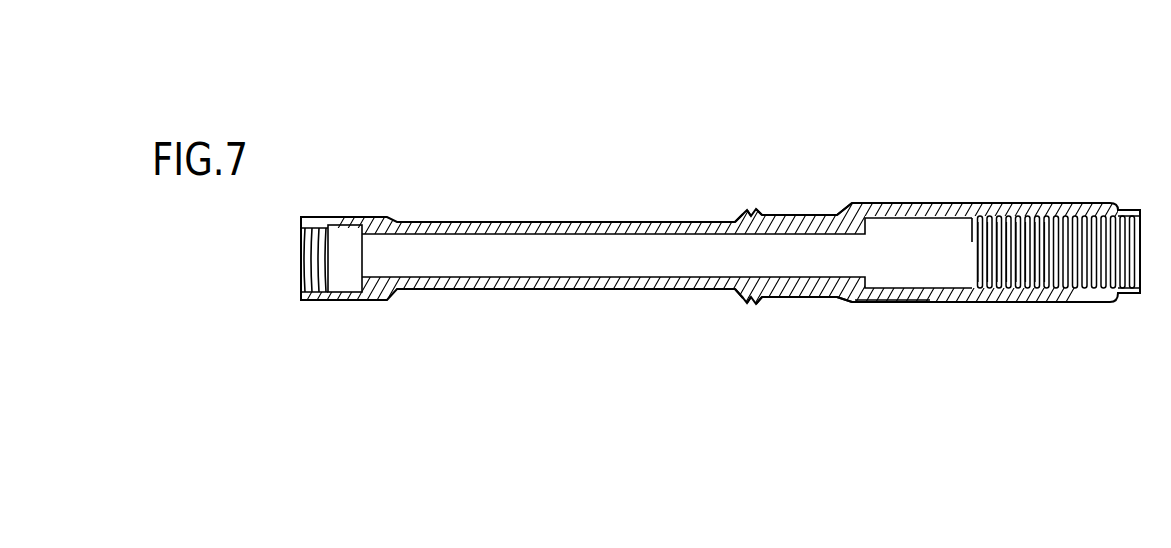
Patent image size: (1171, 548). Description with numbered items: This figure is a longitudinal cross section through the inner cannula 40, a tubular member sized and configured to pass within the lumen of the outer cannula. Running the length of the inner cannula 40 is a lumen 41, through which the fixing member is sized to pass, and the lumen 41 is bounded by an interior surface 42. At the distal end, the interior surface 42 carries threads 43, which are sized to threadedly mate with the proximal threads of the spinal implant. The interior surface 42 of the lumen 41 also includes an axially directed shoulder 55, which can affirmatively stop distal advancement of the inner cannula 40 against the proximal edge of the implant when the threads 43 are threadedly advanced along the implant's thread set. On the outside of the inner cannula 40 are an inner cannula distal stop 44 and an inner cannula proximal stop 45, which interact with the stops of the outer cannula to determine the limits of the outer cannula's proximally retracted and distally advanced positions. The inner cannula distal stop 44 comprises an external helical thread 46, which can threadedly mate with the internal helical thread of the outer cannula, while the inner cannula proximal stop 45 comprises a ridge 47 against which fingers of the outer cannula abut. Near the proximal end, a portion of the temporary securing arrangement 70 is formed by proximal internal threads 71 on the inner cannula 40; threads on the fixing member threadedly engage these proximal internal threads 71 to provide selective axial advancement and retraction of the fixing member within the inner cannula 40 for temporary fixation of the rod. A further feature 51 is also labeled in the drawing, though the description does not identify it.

The inner cannula 40 is at (1017, 126).
The lumen 41 is at (543, 260).
The interior surface 42 is at (572, 265).
The threads 43 is at (300, 267).
The inner cannula distal stop 44 is at (752, 213).
The inner cannula proximal stop 45 is at (913, 205).
The external helical thread 46 is at (763, 213).
The ridge 47 is at (915, 305).
The ridge 51 is at (740, 215).
The shoulder 55 is at (356, 232).
The temporary securing arrangement 70 is at (1052, 233).
The proximal internal threads 71 is at (1038, 215).